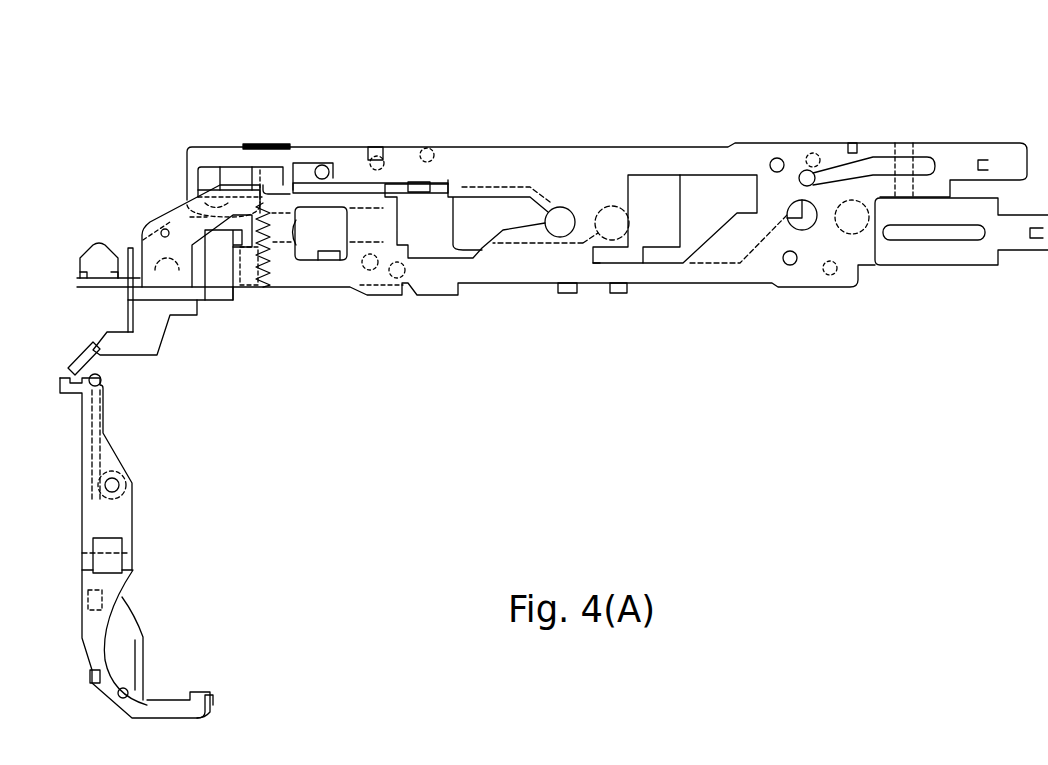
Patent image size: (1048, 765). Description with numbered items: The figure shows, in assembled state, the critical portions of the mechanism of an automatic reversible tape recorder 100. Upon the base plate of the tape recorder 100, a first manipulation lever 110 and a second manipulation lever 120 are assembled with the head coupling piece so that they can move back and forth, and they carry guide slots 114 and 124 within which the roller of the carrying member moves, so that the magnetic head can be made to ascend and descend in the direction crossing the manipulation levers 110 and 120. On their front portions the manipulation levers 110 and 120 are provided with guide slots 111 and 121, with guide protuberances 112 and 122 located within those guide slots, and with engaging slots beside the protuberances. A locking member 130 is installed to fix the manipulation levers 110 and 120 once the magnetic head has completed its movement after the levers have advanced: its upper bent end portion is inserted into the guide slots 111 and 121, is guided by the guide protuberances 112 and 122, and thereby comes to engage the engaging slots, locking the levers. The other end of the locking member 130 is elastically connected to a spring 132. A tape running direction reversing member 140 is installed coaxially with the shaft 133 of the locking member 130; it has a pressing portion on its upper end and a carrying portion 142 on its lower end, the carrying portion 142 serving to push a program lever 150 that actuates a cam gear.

The tape recorder 100 is at (916, 97).
The first manipulation lever 110 is at (947, 142).
The guide slot 111 is at (205, 177).
The guide protuberance 112 is at (222, 190).
The guide slot 114 is at (648, 197).
The second manipulation lever 120 is at (932, 257).
The guide slot 121 is at (302, 177).
The guide protuberance 122 is at (280, 190).
The guide slot 124 is at (737, 187).
The locking member 130 is at (175, 215).
The spring 132 is at (270, 270).
The shaft 133 is at (140, 228).
The tape running direction reversing member 140 is at (157, 338).
The carrying portion 142 is at (87, 360).
The program lever 150 is at (122, 517).